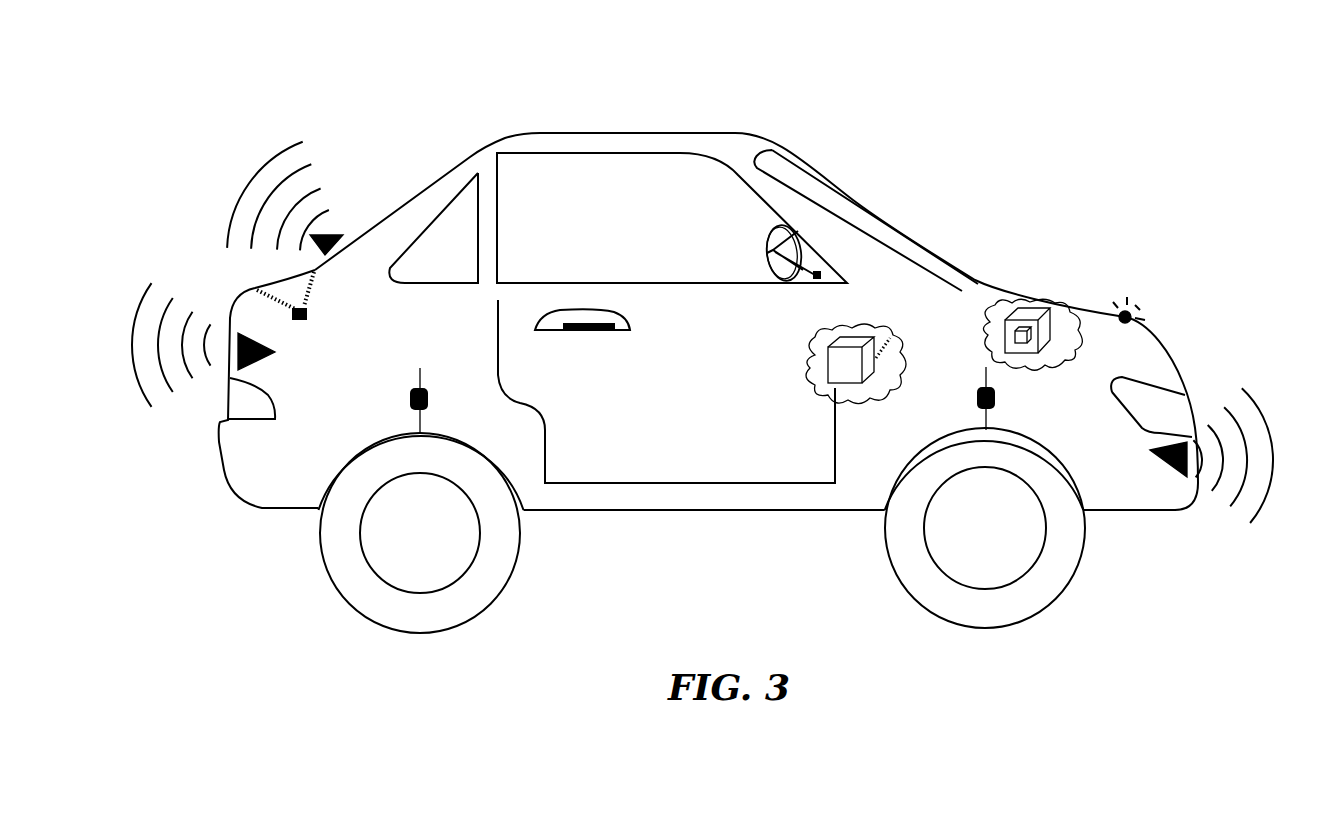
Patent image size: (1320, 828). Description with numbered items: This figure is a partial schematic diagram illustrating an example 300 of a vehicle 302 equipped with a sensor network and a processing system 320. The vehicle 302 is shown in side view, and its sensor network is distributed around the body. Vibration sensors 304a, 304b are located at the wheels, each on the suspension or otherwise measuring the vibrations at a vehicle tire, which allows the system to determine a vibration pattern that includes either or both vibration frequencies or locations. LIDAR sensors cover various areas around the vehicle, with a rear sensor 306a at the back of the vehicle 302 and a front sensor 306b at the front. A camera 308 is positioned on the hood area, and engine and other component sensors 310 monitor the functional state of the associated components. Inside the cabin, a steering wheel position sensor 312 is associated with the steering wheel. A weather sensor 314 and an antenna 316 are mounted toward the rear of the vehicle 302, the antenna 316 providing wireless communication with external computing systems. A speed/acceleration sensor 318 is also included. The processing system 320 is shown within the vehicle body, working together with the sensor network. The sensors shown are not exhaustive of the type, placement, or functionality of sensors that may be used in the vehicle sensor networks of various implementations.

The example 300 is at (1005, 112).
The vehicle 302 is at (611, 133).
The vibration sensor 304a is at (425, 387).
The vibration sensor 304b is at (977, 388).
The rear sensor 306a is at (260, 354).
The front sensor 306b is at (1149, 453).
The camera 308 is at (1136, 303).
The engine and other component sensors 310 is at (982, 314).
The steering wheel position sensor 312 is at (813, 280).
The weather sensor 314 is at (307, 313).
The antenna 316 is at (328, 233).
The speed/acceleration sensor 318 is at (1030, 335).
The processing system 320 is at (815, 357).